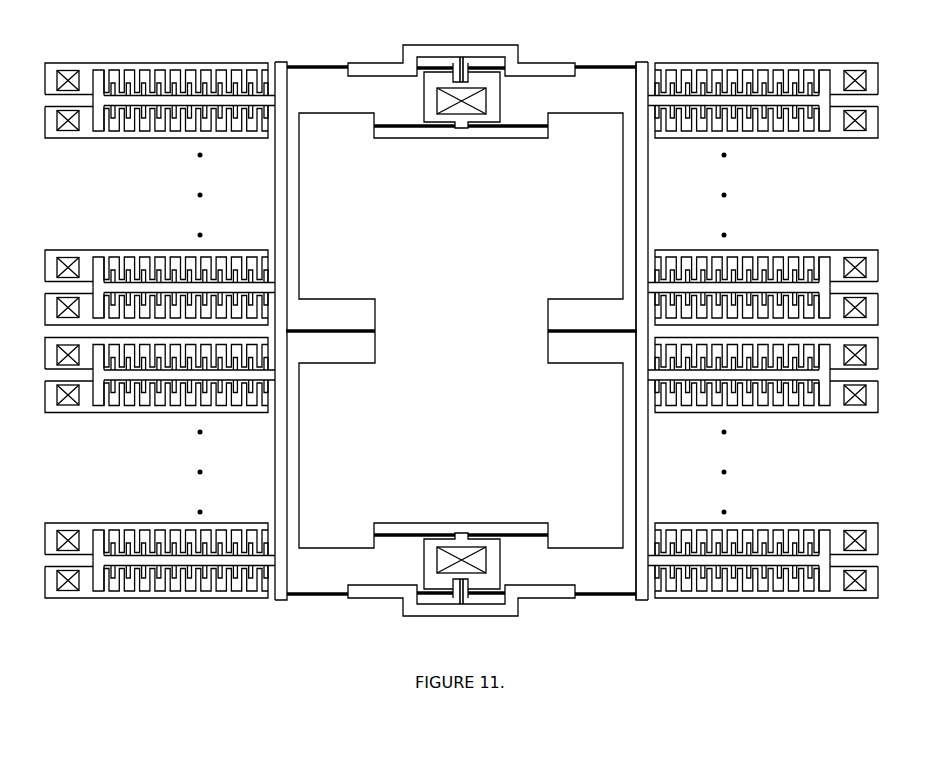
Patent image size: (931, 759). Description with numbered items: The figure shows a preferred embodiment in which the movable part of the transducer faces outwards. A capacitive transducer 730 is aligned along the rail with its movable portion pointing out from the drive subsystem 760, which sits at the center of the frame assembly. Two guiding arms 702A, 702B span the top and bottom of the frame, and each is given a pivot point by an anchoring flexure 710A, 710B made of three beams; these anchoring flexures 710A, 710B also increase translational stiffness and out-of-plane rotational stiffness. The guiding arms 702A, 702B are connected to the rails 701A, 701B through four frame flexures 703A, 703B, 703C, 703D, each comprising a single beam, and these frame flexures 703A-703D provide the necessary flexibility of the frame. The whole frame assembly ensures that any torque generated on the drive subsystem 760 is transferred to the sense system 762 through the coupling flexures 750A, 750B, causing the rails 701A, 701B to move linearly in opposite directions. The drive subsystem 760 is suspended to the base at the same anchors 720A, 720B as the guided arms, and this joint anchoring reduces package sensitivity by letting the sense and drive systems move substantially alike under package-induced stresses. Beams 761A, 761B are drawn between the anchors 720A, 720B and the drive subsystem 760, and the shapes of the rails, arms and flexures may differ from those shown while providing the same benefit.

The rail 701A is at (290, 222).
The rail 701B is at (641, 162).
The guiding arm 702A is at (522, 68).
The guiding arm 702B is at (462, 610).
The frame flexure 703A is at (303, 66).
The frame flexure 703B is at (613, 67).
The frame flexure 703C is at (303, 595).
The frame flexure 703D is at (606, 596).
The anchoring flexure 710A is at (455, 63).
The anchoring flexure 710B is at (462, 595).
The anchor 720A is at (493, 108).
The anchor 720B is at (492, 569).
The capacitive transducer 730 is at (180, 132).
The coupling flexure 750A is at (325, 330).
The coupling flexure 750B is at (598, 330).
The drive subsystem 760 is at (458, 367).
The upper drive beam 761A is at (412, 127).
The lower drive beam 761B is at (397, 535).
The sense system 762 is at (654, 428).